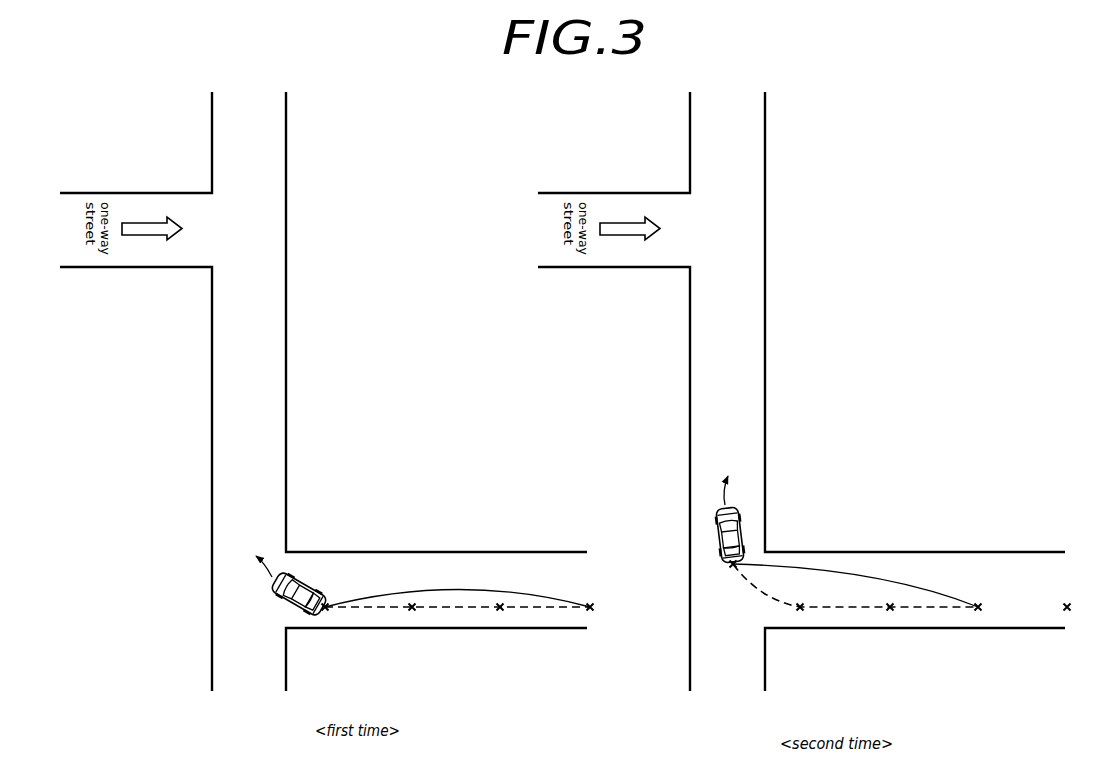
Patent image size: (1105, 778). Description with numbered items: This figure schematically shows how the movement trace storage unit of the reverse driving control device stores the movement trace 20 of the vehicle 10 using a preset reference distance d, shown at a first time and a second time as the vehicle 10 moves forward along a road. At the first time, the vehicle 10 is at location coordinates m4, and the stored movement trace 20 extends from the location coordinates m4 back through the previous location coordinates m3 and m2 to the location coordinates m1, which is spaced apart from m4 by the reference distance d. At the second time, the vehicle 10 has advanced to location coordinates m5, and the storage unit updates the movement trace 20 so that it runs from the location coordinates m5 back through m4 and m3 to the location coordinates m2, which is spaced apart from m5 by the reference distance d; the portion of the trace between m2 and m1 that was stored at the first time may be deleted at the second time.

The vehicle 10 is at (312, 582).
The movement trace 20 is at (701, 571).
The location coordinates m1 is at (830, 615).
The location coordinates m2 is at (744, 615).
The location coordinates m3 is at (655, 615).
The location coordinates m4 is at (573, 615).
The location coordinates m5 is at (725, 574).
The reference distance d is at (651, 585).